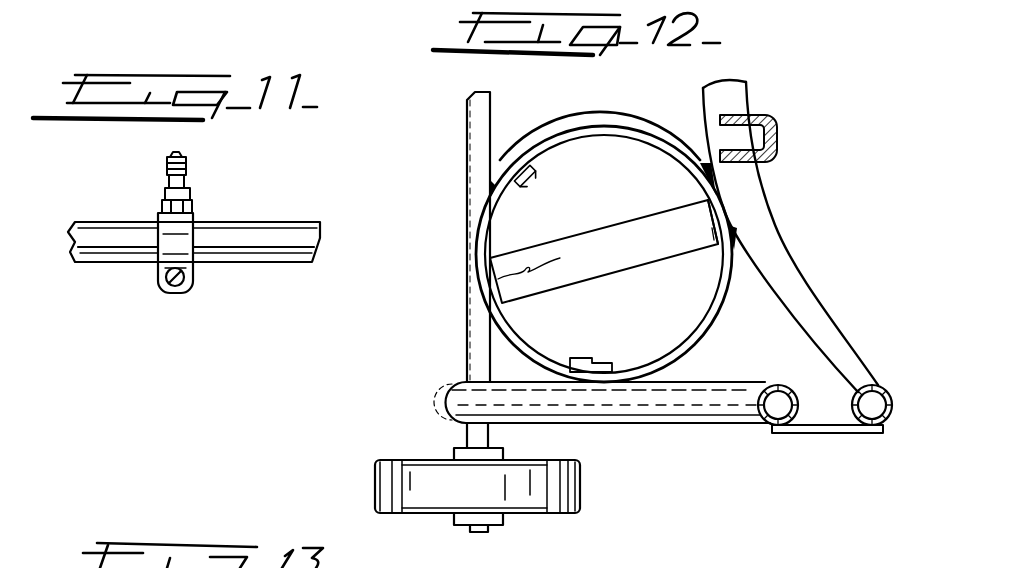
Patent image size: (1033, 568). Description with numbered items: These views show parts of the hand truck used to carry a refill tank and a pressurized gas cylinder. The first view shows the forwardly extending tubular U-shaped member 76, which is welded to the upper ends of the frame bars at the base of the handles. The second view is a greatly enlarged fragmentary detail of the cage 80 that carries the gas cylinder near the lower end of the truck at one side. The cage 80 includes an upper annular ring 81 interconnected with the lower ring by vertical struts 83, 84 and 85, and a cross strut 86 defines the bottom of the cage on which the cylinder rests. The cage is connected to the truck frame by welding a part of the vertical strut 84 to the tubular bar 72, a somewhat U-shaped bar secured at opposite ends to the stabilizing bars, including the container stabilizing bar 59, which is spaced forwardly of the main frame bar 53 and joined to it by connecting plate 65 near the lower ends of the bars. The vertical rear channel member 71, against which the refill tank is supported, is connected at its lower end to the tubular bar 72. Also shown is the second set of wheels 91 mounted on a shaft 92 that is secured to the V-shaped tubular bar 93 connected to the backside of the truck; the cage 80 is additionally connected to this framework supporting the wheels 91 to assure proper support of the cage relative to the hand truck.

In FIG. 11, the tubular U-shaped member 76 is at (258, 225).
In FIG. 12, the shaft 92 is at (468, 330).
In FIG. 12, the cage 80 is at (651, 128).
In FIG. 12, the upper annular ring 81 is at (552, 137).
In FIG. 12, the vertical strut 83 is at (522, 190).
In FIG. 12, the cross strut 86 is at (583, 240).
In FIG. 12, the vertical strut 84 is at (716, 242).
In FIG. 12, the vertical strut 85 is at (592, 358).
In FIG. 12, the V-shaped tubular bar 93 is at (612, 403).
In FIG. 12, the second set of wheels 91 is at (563, 492).
In FIG. 12, the vertical frame bar 53 is at (769, 424).
In FIG. 12, the container stabilizing bar 59 is at (889, 424).
In FIG. 12, the connecting plate 65 is at (813, 428).
In FIG. 12, the tubular bar 72 is at (772, 236).
In FIG. 12, the vertical rear channel member 71 is at (779, 131).